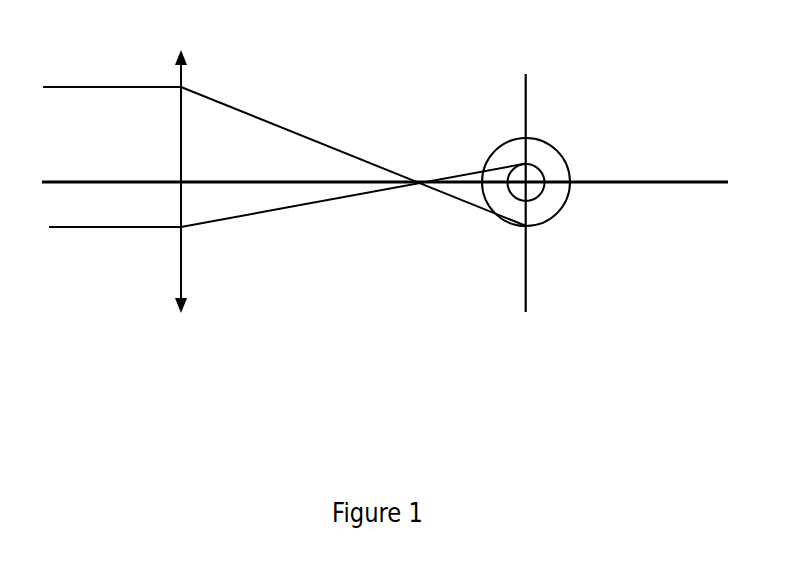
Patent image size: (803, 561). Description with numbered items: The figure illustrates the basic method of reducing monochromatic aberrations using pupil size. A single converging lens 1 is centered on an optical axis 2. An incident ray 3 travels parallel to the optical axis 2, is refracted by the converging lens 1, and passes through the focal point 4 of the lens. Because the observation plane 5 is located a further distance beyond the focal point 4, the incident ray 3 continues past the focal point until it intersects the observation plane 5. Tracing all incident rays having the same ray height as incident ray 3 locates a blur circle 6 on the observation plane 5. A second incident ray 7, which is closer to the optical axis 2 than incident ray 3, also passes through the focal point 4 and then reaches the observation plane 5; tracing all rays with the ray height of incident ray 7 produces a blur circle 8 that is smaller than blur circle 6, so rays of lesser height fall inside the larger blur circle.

The converging lens 1 is at (181, 163).
The optical axis 2 is at (385, 167).
The incident ray 3 is at (284, 139).
The focal point 4 is at (410, 202).
The observation plane 5 is at (524, 168).
The blur circle 6 is at (553, 225).
The incident ray 7 is at (287, 217).
The blur circle 8 is at (542, 165).